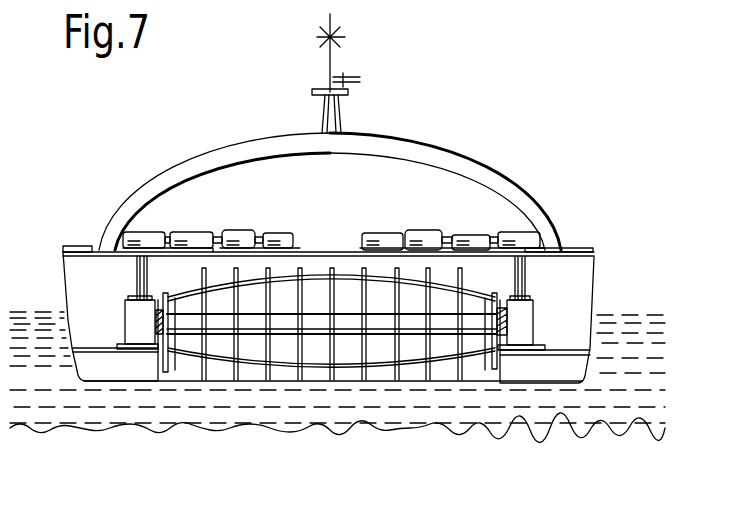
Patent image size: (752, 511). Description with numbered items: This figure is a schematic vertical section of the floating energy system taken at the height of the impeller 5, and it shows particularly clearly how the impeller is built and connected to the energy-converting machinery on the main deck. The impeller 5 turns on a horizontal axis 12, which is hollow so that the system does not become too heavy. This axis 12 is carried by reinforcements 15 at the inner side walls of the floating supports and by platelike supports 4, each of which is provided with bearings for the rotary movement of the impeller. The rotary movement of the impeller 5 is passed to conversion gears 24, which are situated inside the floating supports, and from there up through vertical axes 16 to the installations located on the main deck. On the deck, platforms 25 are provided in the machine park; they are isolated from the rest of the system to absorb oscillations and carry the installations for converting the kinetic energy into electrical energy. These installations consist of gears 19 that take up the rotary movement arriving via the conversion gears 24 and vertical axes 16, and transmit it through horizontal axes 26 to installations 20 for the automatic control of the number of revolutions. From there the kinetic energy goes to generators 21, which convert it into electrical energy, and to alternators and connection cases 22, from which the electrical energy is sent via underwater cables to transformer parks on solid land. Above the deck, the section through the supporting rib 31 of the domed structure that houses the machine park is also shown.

The platelike supports 4 is at (425, 370).
The impeller 5 is at (245, 352).
The horizontal axis 12 is at (190, 342).
The reinforcements 15 is at (163, 375).
The vertical axes 16 is at (137, 275).
The gears 19 is at (140, 233).
The installations for the automatic control of the number of revolutions 20 is at (192, 172).
The generators 21 is at (243, 237).
The alternators and connection cases 22 is at (280, 237).
The conversion gears 24 is at (132, 327).
The platforms 25 is at (300, 248).
The horizontal axes 26 is at (493, 232).
The supporting rib of the domed structure 31 is at (187, 240).